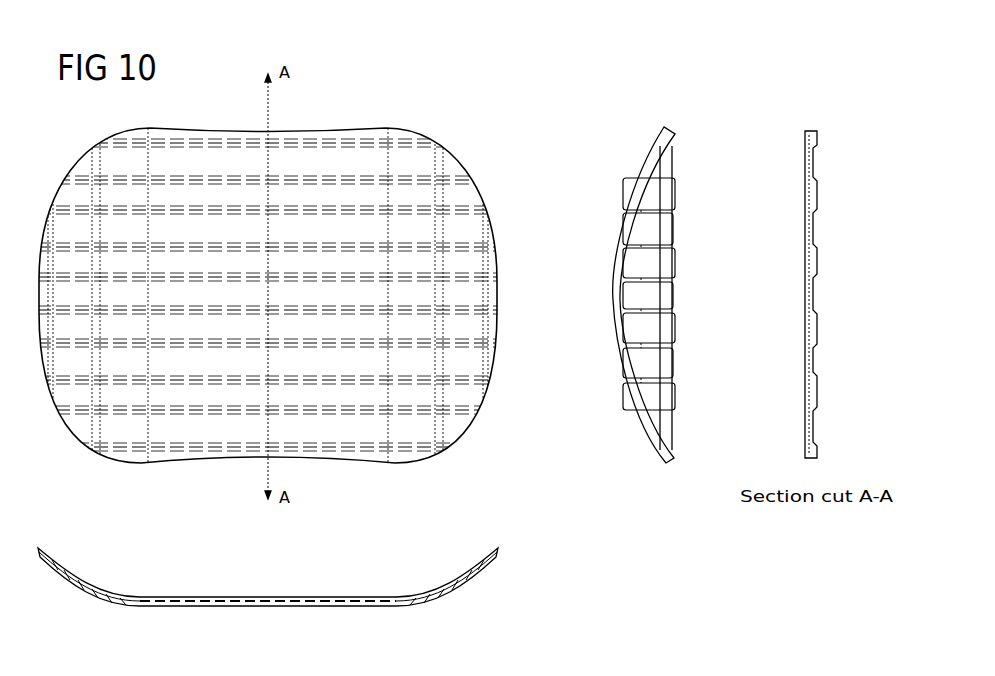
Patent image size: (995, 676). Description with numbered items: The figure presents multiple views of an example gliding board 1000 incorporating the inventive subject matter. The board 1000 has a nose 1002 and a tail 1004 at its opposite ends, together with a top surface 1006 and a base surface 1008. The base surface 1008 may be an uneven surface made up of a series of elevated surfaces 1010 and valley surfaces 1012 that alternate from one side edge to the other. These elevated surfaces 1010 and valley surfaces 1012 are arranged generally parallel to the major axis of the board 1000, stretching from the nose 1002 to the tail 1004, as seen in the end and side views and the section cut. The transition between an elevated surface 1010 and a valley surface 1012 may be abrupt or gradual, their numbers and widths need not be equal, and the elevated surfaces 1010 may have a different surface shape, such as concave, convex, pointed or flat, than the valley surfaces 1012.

The board 1000 is at (368, 52).
The nose 1002 is at (37, 365).
The tail 1004 is at (483, 185).
The top surface 1006 is at (257, 597).
The base surface 1008 is at (304, 615).
The elevated surfaces 1010 is at (678, 328).
The valley surfaces 1012 is at (673, 365).